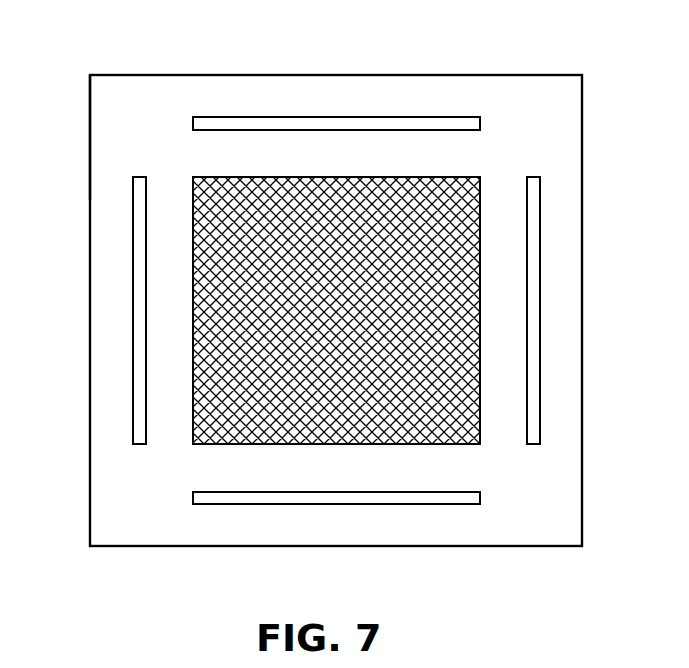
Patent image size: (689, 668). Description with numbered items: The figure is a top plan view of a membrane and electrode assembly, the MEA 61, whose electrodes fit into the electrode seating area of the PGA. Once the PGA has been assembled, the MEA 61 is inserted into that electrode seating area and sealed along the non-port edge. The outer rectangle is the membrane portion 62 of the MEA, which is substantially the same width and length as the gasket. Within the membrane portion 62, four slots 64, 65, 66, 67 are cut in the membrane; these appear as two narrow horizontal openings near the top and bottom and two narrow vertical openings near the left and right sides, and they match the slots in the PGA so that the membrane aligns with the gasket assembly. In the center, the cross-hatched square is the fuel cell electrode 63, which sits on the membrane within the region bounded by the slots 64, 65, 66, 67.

The MEA 61 is at (565, 120).
The membrane portion 62 is at (128, 131).
The fuel cell electrode 63 is at (193, 444).
The slot 64 is at (132, 328).
The slot 65 is at (535, 259).
The slot 66 is at (337, 122).
The slot 67 is at (328, 498).